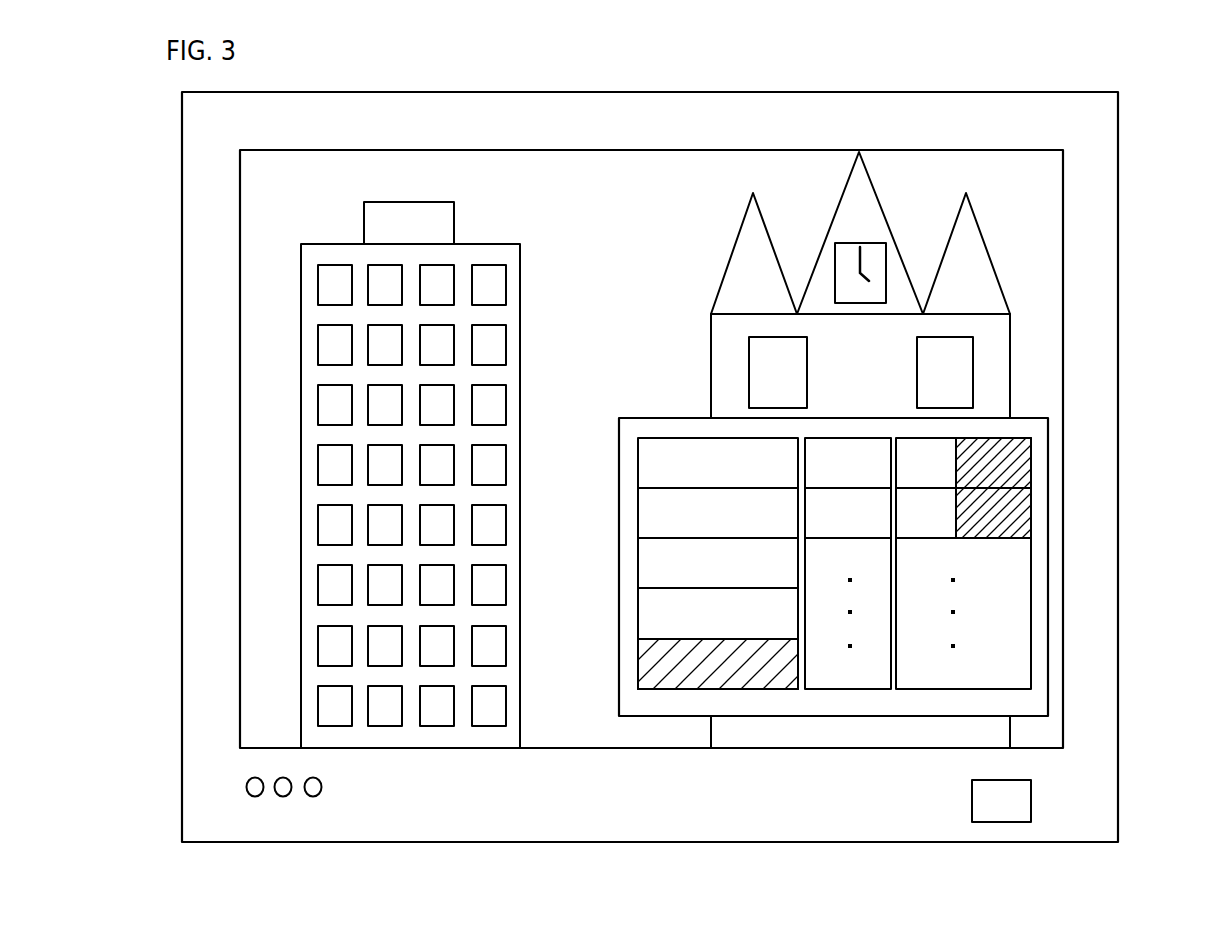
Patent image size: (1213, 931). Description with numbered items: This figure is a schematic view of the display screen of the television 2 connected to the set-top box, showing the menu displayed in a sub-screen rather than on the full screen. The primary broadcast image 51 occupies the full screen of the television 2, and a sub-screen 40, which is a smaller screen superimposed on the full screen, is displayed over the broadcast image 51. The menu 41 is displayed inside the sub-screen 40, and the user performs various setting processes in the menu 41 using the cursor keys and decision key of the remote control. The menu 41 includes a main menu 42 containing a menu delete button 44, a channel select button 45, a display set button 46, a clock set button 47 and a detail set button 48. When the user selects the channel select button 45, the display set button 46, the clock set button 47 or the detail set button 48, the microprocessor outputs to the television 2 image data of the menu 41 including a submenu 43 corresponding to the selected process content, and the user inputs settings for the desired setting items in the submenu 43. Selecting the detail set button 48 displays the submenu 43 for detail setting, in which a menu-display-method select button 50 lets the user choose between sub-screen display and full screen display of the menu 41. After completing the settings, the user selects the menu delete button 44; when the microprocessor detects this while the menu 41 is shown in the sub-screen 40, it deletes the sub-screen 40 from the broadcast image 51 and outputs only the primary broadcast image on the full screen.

The television receiver 2 is at (622, 73).
The broadcast image 51 is at (794, 167).
The sub-screen 40 is at (1032, 418).
The menu 41 is at (1036, 499).
The main menu 42 is at (683, 693).
The submenu 43 is at (1036, 468).
The menu delete button 44 is at (638, 467).
The channel select button 45 is at (638, 514).
The display set button 46 is at (638, 580).
The clock set button 47 is at (638, 618).
The detail set button 48 is at (638, 655).
The menu-display-method select button 50 is at (964, 546).